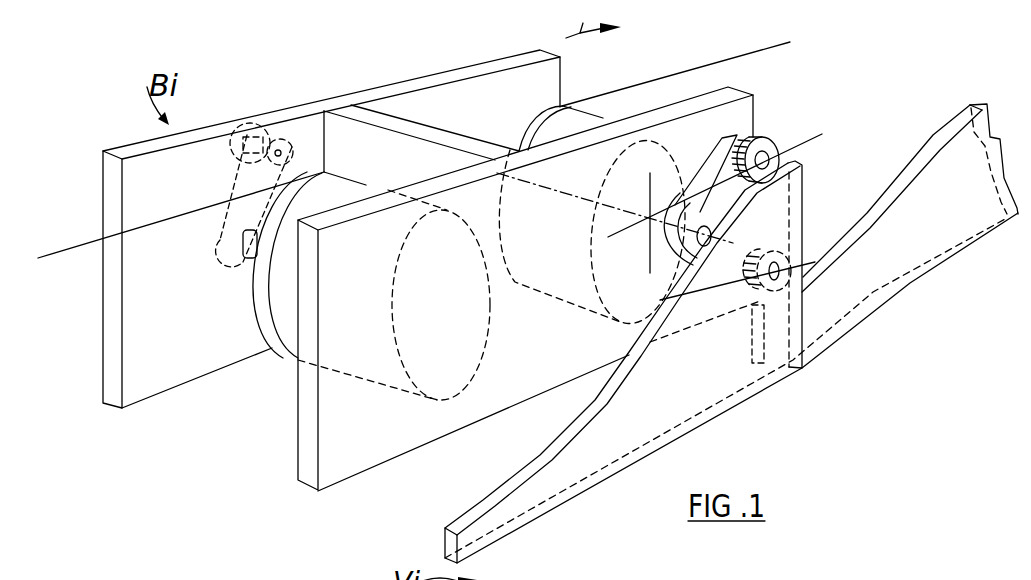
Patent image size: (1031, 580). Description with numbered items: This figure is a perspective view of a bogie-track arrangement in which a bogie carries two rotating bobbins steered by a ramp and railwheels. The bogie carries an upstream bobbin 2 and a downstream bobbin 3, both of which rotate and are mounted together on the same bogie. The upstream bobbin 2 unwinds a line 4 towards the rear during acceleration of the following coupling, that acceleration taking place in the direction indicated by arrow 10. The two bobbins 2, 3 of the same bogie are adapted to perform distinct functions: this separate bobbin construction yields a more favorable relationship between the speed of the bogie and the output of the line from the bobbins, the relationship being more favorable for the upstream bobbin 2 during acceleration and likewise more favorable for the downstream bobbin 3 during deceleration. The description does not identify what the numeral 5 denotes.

The upstream bobbin 2 is at (283, 355).
The downstream bobbin 3 is at (605, 117).
The line 4 is at (68, 251).
The axis line 5 is at (684, 72).
The arrow 10 is at (593, 19).